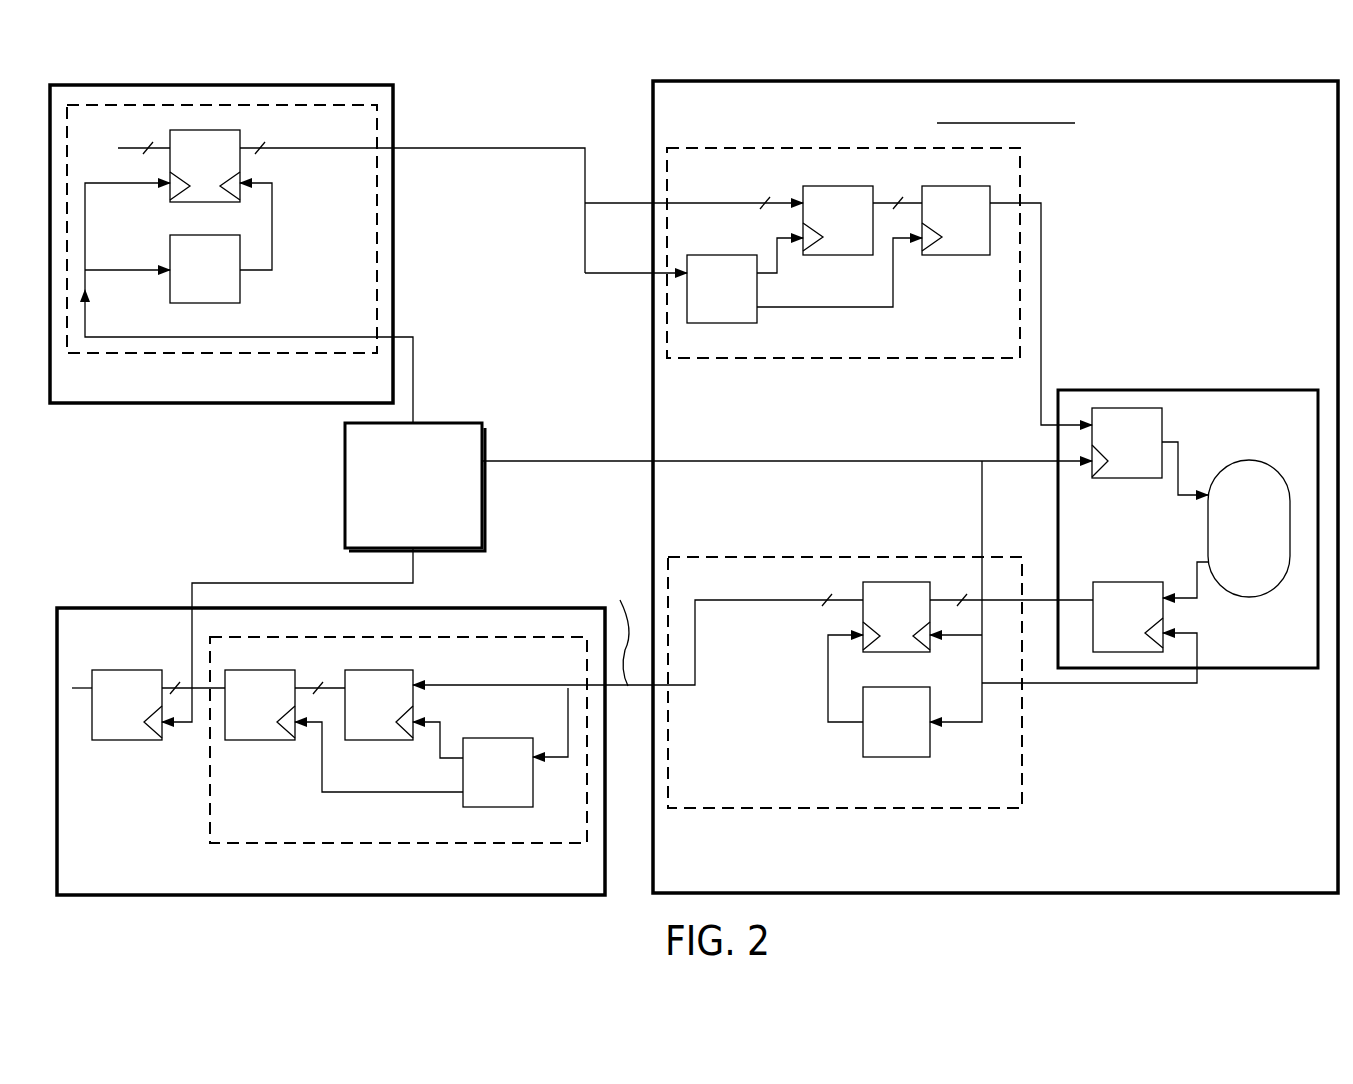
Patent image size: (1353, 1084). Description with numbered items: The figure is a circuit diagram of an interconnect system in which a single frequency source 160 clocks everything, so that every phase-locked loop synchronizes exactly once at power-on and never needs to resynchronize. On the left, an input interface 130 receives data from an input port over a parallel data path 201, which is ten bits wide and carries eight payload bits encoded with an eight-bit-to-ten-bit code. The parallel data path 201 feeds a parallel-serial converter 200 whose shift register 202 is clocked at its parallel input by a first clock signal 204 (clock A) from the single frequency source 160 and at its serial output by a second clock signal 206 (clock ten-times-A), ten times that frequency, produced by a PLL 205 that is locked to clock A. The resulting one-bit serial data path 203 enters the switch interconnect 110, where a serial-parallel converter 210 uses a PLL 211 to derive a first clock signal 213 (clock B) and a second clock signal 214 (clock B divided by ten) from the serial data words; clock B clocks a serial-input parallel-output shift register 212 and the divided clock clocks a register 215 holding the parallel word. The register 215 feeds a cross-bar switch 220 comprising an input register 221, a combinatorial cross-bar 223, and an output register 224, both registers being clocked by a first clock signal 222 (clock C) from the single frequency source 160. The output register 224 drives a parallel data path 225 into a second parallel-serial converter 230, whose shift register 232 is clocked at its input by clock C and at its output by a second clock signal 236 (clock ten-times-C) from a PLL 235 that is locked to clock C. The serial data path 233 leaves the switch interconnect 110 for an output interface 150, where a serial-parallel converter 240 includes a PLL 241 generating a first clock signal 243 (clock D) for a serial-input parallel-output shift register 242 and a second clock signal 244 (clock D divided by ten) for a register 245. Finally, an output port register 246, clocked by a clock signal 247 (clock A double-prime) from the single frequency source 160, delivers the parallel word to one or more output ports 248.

The switch interconnect 110 is at (972, 895).
The input interface 130 is at (85, 406).
The output interface 150 is at (455, 897).
The single frequency source 160 is at (345, 490).
The parallel-serial converter 200 is at (327, 355).
The parallel data path 201 is at (125, 148).
The shift register 202 is at (205, 166).
The serial data path 203 is at (300, 149).
The first clock signal 204 is at (86, 212).
The PLL 205 is at (167, 288).
The second clock signal 206 is at (257, 271).
The serial-parallel converter 210 is at (740, 361).
The PLL 211 is at (737, 326).
The serial-input parallel-output shift register 212 is at (855, 184).
The first clock signal 213 is at (772, 246).
The second clock signal 214 is at (862, 308).
The register 215 is at (975, 182).
The cross-bar switch 220 is at (1195, 388).
The input register 221 is at (1142, 480).
The first clock signal 222 is at (738, 462).
The combinatorial cross-bar 223 is at (1248, 598).
The output register 224 is at (1143, 580).
The parallel data path 225 is at (1035, 598).
The parallel-serial converter 230 is at (972, 810).
The shift register 232 is at (896, 617).
The serial data path 233 is at (784, 601).
The PLL 235 is at (932, 722).
The second clock signal 236 is at (828, 672).
The serial-parallel converter 240 is at (455, 845).
The PLL 241 is at (515, 808).
The serial-input parallel-output shift register 242 is at (388, 742).
The first clock signal 243 is at (443, 737).
The second clock signal 244 is at (322, 786).
The register 245 is at (277, 742).
The output port register 246 is at (144, 742).
The clock signal 247 is at (224, 582).
The output ports 248 is at (72, 689).